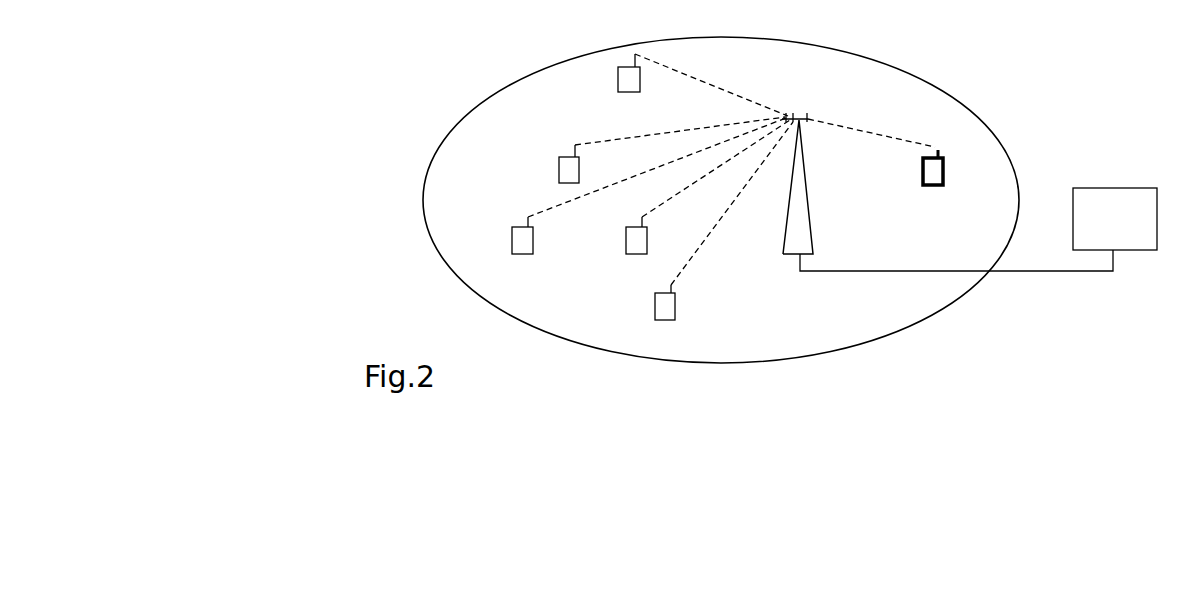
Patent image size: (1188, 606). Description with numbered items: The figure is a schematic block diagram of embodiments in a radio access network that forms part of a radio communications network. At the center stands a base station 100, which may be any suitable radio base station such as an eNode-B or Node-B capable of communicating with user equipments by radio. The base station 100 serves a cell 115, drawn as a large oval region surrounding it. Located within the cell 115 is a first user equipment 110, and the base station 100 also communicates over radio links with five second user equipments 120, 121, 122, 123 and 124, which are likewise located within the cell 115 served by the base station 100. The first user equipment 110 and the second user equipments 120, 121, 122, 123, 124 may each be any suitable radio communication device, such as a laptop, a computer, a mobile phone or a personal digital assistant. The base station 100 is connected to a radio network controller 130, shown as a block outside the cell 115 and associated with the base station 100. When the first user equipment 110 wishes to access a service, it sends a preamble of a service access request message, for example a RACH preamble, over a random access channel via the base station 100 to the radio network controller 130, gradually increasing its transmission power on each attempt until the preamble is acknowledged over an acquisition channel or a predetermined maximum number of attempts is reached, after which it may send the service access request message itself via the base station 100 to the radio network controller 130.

The base station 100 is at (803, 218).
The first user equipment 110 is at (895, 152).
The cell 115 is at (850, 337).
The second user equipment 120 is at (703, 85).
The second user equipment 121 is at (672, 150).
The second user equipment 122 is at (649, 186).
The second user equipment 123 is at (708, 187).
The second user equipment 124 is at (724, 221).
The radio network controller 130 is at (1115, 219).